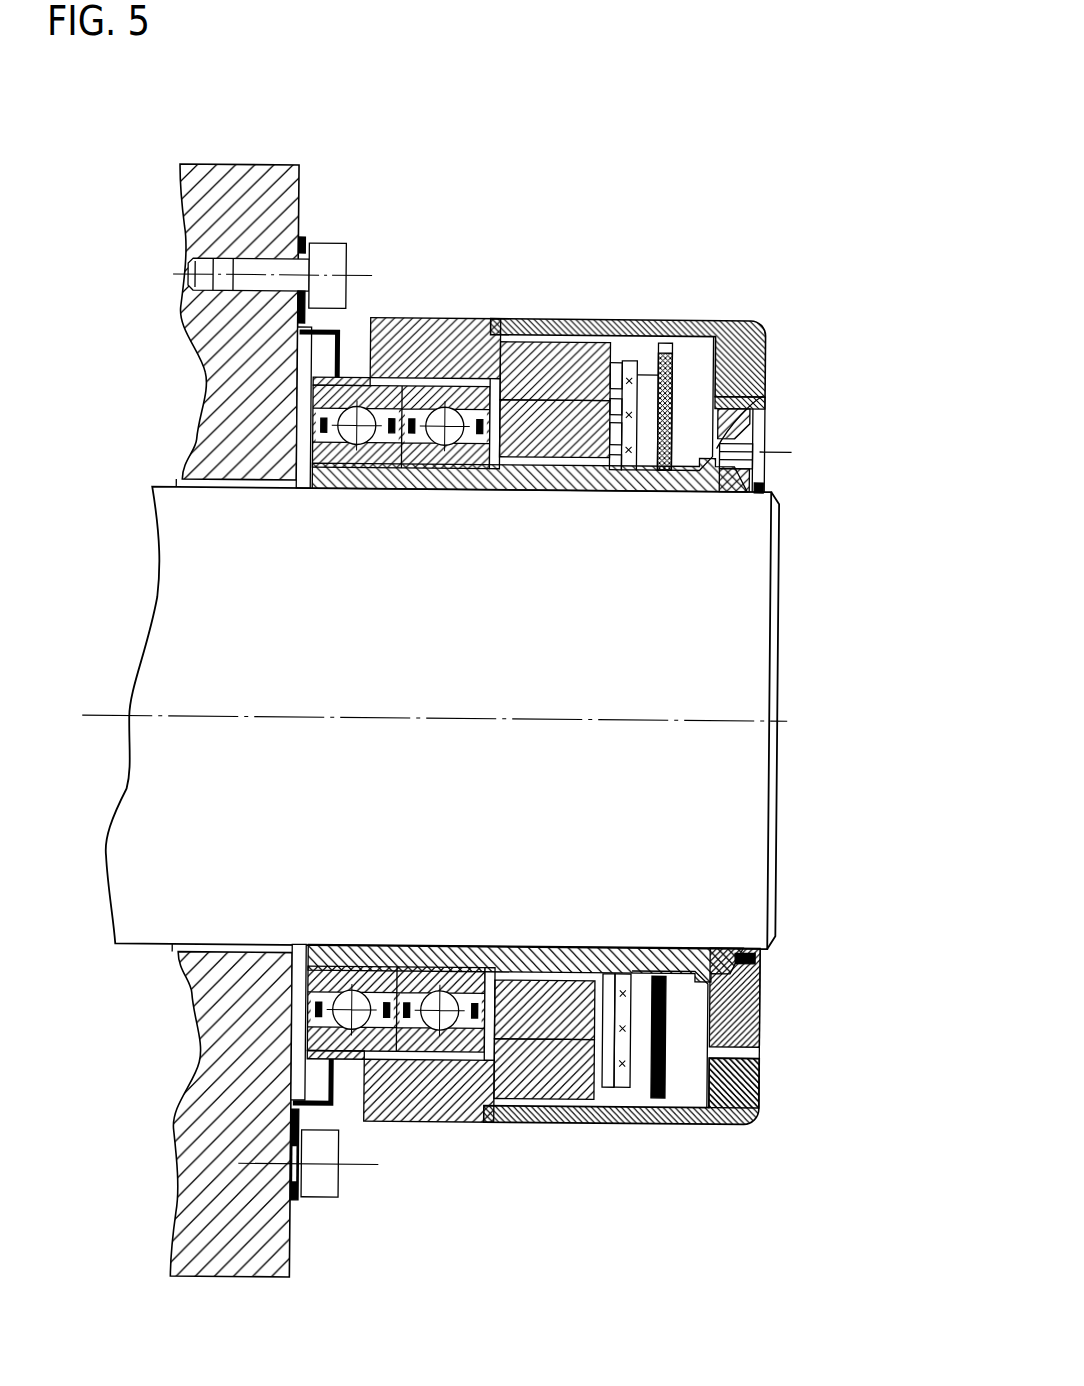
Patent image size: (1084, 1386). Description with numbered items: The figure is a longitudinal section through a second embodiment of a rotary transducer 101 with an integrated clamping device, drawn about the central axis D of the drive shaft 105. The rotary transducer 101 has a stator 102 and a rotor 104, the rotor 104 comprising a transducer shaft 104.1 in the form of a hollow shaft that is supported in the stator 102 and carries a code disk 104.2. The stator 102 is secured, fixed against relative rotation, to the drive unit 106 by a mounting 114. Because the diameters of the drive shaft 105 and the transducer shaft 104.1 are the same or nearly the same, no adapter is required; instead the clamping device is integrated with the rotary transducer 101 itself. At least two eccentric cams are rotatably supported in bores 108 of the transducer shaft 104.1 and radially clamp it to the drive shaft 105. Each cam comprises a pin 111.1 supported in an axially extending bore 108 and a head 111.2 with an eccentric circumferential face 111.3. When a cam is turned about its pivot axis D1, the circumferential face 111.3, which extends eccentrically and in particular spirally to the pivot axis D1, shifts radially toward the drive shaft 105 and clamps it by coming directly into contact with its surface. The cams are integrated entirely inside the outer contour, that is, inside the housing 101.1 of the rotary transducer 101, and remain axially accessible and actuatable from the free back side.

The rotary transducer 101 is at (560, 305).
The housing 101.1 is at (660, 321).
The stator 102 is at (430, 1119).
The rotor 104 is at (482, 489).
The transducer shaft 104.1 is at (403, 483).
The code disk 104.2 is at (620, 1070).
The drive shaft 105 is at (737, 640).
The drive unit 106 is at (282, 222).
The bore 108 is at (765, 344).
The pin 111.1 is at (765, 380).
The head 111.2 is at (767, 427).
The circumferential face 111.3 is at (767, 400).
The mounting 114 is at (340, 1098).
The axis D is at (790, 718).
The pivot axis D1 is at (781, 449).